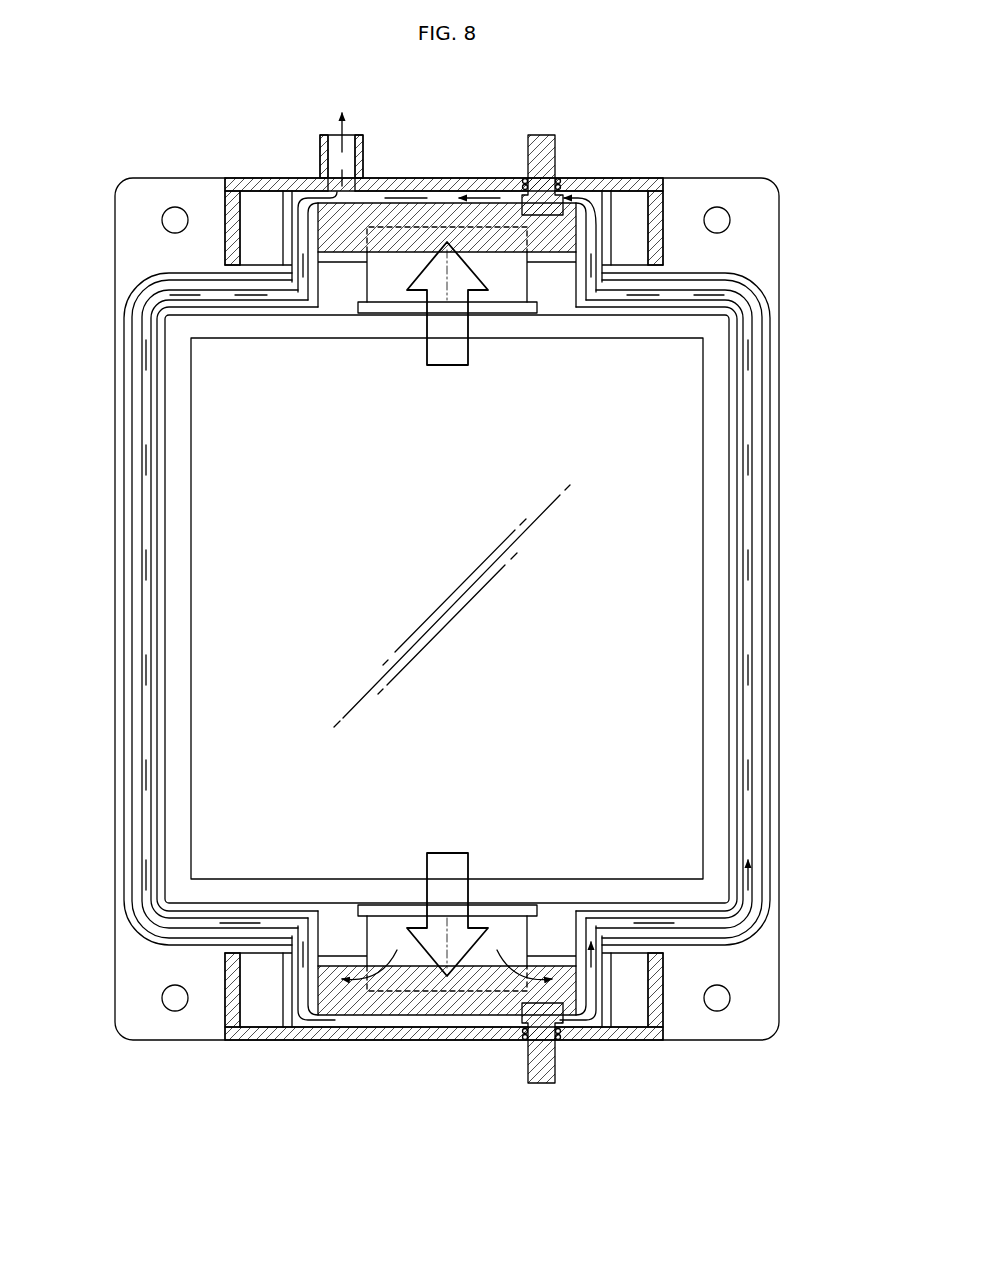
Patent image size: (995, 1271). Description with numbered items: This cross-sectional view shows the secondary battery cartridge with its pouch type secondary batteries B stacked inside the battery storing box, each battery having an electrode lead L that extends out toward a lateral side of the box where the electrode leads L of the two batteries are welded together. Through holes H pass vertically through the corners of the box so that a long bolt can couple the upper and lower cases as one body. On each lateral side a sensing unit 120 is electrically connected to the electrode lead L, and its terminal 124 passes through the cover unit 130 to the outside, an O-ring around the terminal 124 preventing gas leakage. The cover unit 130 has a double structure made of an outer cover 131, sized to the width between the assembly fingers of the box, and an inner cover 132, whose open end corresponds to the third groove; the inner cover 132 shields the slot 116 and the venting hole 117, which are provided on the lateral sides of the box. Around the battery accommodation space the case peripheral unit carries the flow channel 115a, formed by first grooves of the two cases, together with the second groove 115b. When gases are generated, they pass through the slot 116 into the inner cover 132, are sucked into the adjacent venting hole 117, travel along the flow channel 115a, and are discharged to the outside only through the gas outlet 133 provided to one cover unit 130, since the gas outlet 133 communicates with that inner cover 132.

The flow channel 115a is at (145, 502).
The second groove 115b is at (127, 407).
The slot 116 is at (351, 283).
The venting hole 117 is at (303, 255).
The sensing unit 120 is at (447, 213).
The terminal 124 is at (540, 142).
The cover unit 130 is at (301, 171).
The outer cover 131 is at (661, 205).
The inner cover 132 is at (612, 213).
The gas outlet 133 is at (334, 142).
The through hole H is at (175, 207).
The electrode lead L is at (508, 283).
The secondary battery B is at (630, 597).